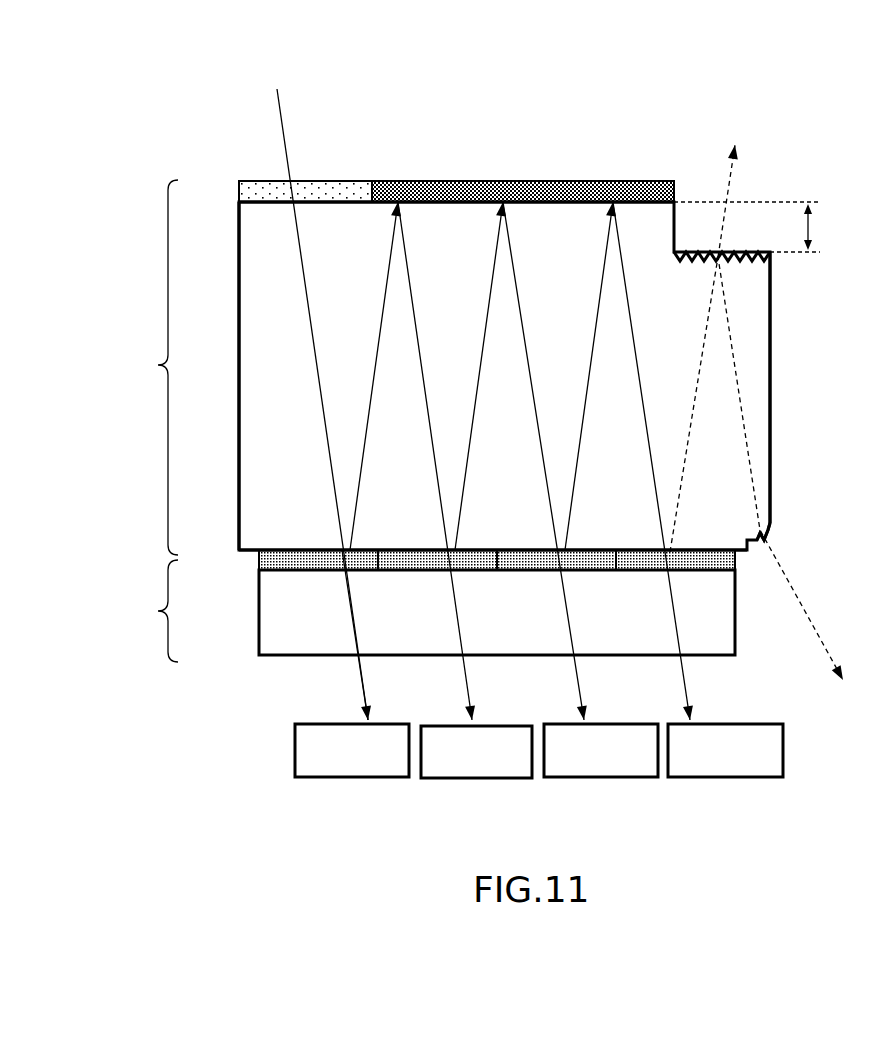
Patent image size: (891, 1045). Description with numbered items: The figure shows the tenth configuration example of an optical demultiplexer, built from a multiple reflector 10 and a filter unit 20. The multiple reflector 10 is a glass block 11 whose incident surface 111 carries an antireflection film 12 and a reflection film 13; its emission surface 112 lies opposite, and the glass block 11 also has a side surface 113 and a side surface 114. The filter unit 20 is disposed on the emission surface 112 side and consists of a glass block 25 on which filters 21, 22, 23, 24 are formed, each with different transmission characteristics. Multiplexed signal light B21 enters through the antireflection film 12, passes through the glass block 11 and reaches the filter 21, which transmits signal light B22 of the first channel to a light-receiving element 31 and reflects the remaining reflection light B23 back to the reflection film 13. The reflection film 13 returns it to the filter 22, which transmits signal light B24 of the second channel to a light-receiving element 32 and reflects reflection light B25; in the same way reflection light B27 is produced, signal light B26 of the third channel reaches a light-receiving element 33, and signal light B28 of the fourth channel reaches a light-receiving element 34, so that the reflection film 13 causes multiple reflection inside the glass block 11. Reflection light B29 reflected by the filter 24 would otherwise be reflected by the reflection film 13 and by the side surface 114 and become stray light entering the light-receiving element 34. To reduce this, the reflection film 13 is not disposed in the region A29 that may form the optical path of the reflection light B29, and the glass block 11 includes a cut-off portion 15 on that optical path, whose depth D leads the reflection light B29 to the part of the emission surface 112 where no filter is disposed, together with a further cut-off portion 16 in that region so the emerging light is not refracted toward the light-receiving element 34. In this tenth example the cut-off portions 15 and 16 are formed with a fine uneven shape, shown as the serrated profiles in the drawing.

The multiple reflector 10 is at (146, 367).
The glass block 11 is at (511, 377).
The antireflection film 12 is at (326, 182).
The reflection film 13 is at (622, 182).
The cut-off portion 15 is at (738, 253).
The cut-off portion 16 is at (768, 532).
The filter unit 20 is at (424, 606).
The filter 21 is at (300, 571).
The filter 22 is at (402, 571).
The filter 23 is at (516, 571).
The filter 24 is at (628, 571).
The glass block 25 is at (259, 614).
The light-receiving element 31 is at (333, 778).
The light-receiving element 32 is at (464, 778).
The light-receiving element 33 is at (589, 778).
The light-receiving element 34 is at (707, 778).
The incident surface 111 is at (470, 206).
The emission surface 112 is at (250, 550).
The left side surface 113 is at (241, 480).
The side surface 114 is at (771, 370).
The signal light B21 is at (305, 404).
The signal light of first channel B22 is at (376, 635).
The reflection light B23 is at (371, 376).
The signal light of second channel B24 is at (457, 461).
The reflection light B25 is at (475, 376).
The signal light of third channel B26 is at (565, 461).
The reflection light B27 is at (585, 376).
The signal light of fourth channel B28 is at (673, 461).
The reflection light B29 is at (751, 468).
The region A29 is at (788, 197).
The depth D is at (756, 227).